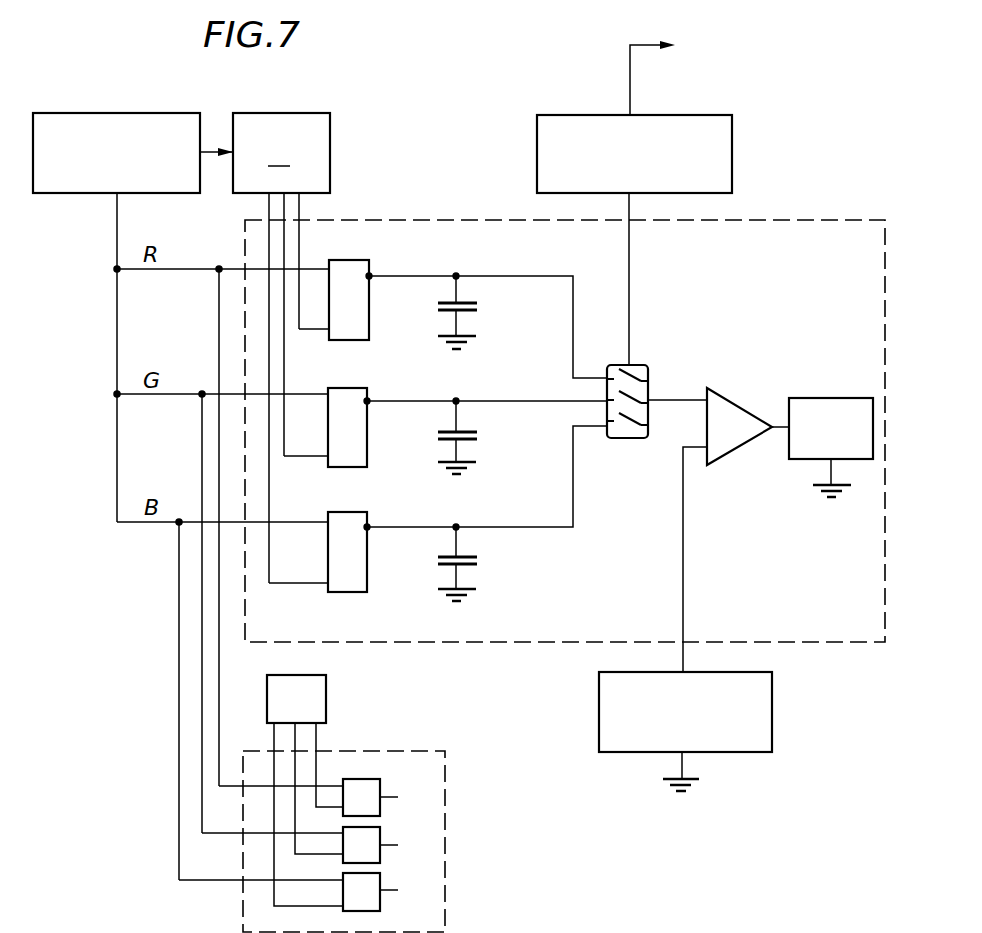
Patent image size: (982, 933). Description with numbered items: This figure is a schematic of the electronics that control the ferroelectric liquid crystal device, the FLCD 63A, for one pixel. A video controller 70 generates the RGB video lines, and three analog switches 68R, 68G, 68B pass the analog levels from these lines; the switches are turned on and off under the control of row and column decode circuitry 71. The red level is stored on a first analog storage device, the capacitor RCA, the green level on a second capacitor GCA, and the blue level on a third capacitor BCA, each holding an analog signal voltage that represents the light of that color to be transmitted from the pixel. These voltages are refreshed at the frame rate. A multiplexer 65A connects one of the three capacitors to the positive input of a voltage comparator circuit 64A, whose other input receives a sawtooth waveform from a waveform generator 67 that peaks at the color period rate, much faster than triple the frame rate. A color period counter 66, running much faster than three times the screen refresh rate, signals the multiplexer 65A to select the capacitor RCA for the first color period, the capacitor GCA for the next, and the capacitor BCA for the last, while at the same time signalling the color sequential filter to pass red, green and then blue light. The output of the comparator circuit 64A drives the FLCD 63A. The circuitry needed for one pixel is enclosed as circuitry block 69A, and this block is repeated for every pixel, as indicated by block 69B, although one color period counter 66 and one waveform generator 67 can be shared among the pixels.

The video controller 70 is at (105, 113).
The row and column decode circuitry 71 is at (265, 153).
The color period counter 66 is at (732, 163).
The circuitry block 69A is at (840, 220).
The analog switch 68R is at (369, 310).
The analog switch 68G is at (367, 432).
The analog switch 68B is at (367, 568).
The first analog storage device (capacitor) RCA is at (468, 307).
The second capacitor GCA is at (468, 437).
The third capacitor BCA is at (468, 562).
The multiplexer 65A is at (641, 365).
The comparator circuit 64A is at (728, 388).
The FLCD 63A is at (790, 460).
The waveform generator 67 is at (772, 705).
The circuitry block 69B is at (445, 818).